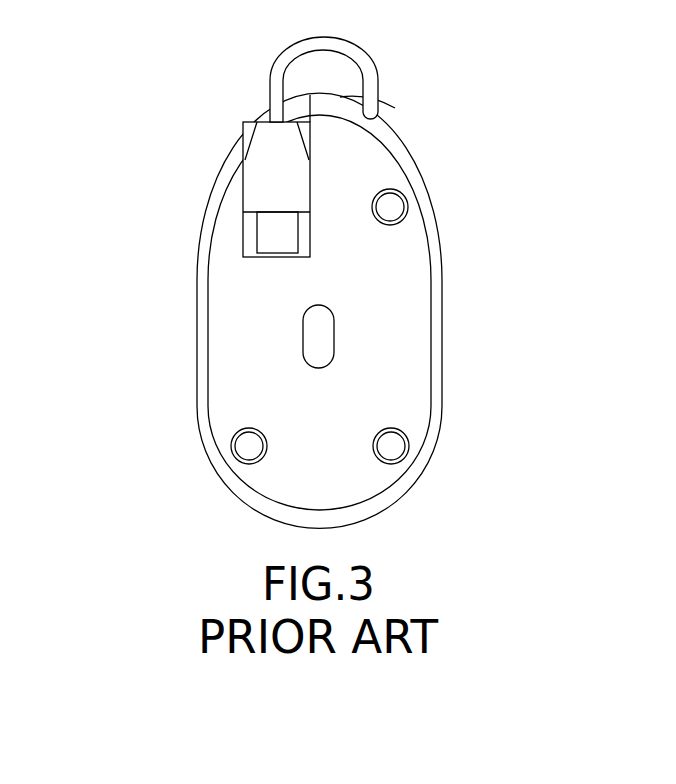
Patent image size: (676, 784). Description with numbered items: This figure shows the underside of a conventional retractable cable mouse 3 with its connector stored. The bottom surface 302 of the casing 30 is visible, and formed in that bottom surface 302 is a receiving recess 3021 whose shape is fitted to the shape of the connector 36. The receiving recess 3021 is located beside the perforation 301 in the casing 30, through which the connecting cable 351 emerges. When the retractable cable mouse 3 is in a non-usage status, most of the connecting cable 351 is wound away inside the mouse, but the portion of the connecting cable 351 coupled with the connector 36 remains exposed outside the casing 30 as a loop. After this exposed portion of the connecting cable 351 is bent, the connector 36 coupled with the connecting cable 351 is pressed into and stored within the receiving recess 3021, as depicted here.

The retractable cable mouse 3 is at (218, 37).
The casing 30 is at (356, 310).
The perforation 301 is at (377, 119).
The bottom surface 302 is at (418, 395).
The receiving recess 3021 is at (261, 236).
The connector 36 is at (216, 176).
The connecting cable 351 is at (371, 78).